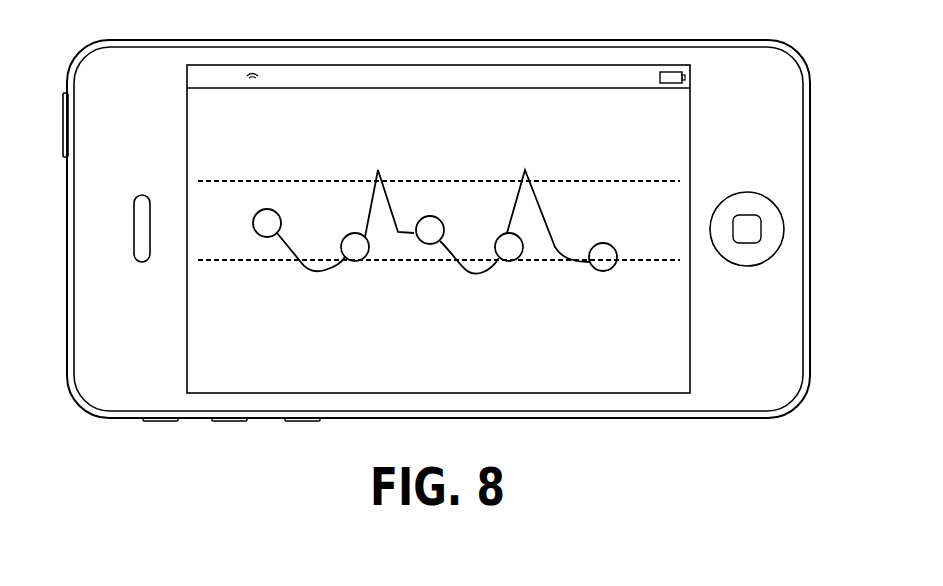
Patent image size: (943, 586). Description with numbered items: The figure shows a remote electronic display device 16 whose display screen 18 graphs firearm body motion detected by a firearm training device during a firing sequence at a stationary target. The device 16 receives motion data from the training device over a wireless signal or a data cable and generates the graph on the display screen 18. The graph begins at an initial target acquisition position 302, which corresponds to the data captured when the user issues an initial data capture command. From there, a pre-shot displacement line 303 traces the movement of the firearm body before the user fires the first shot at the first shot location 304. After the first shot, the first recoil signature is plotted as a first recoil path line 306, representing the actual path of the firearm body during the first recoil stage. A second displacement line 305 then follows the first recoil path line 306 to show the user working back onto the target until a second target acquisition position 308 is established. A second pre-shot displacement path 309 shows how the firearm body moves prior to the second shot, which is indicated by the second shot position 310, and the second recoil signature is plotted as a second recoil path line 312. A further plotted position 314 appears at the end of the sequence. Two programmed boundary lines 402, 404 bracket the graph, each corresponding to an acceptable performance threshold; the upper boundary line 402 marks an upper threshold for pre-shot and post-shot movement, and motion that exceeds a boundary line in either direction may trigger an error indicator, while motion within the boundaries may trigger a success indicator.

The remote electronic display device 16 is at (812, 115).
The display screen 18 is at (602, 97).
The initial target acquisition position 302 is at (260, 209).
The pre-shot displacement line 303 is at (310, 272).
The first shot location 304 is at (358, 262).
The second displacement line 305 is at (400, 234).
The first recoil path line 306 is at (380, 172).
The second target acquisition position 308 is at (430, 224).
The second pre-shot displacement path 309 is at (475, 276).
The second shot position 310 is at (510, 243).
The second recoil path line 312 is at (536, 190).
The fifth node 314 is at (603, 260).
The upper boundary line 402 is at (636, 181).
The boundary line 404 is at (661, 261).